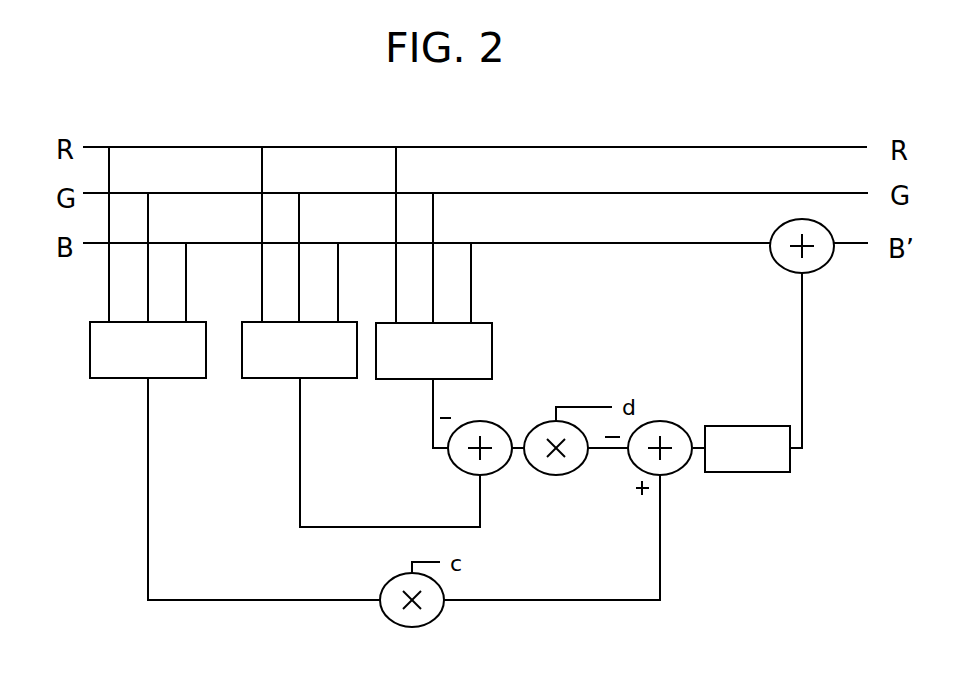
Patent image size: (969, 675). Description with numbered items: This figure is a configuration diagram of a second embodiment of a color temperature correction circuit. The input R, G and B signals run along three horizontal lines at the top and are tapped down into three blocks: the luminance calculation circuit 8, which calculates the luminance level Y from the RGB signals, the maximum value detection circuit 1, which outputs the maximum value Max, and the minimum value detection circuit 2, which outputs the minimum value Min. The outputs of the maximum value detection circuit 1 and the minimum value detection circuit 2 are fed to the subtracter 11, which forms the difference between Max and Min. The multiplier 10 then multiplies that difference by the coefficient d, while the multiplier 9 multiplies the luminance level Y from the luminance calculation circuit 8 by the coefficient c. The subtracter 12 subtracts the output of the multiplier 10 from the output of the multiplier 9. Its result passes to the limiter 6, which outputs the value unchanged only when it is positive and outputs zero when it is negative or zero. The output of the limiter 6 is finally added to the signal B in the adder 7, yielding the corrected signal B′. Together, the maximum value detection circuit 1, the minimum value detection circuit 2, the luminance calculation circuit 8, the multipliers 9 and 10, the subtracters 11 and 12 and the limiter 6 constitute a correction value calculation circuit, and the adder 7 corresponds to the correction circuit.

The maximum value detection circuit 1 is at (252, 378).
The minimum value detection circuit 2 is at (492, 328).
The limiter 6 is at (768, 472).
The adder 7 is at (815, 272).
The luminance calculation circuit 8 is at (100, 378).
The multiplier 9 is at (395, 625).
The multiplier 10 is at (578, 474).
The subtracter 11 is at (465, 472).
The subtracter 12 is at (682, 418).